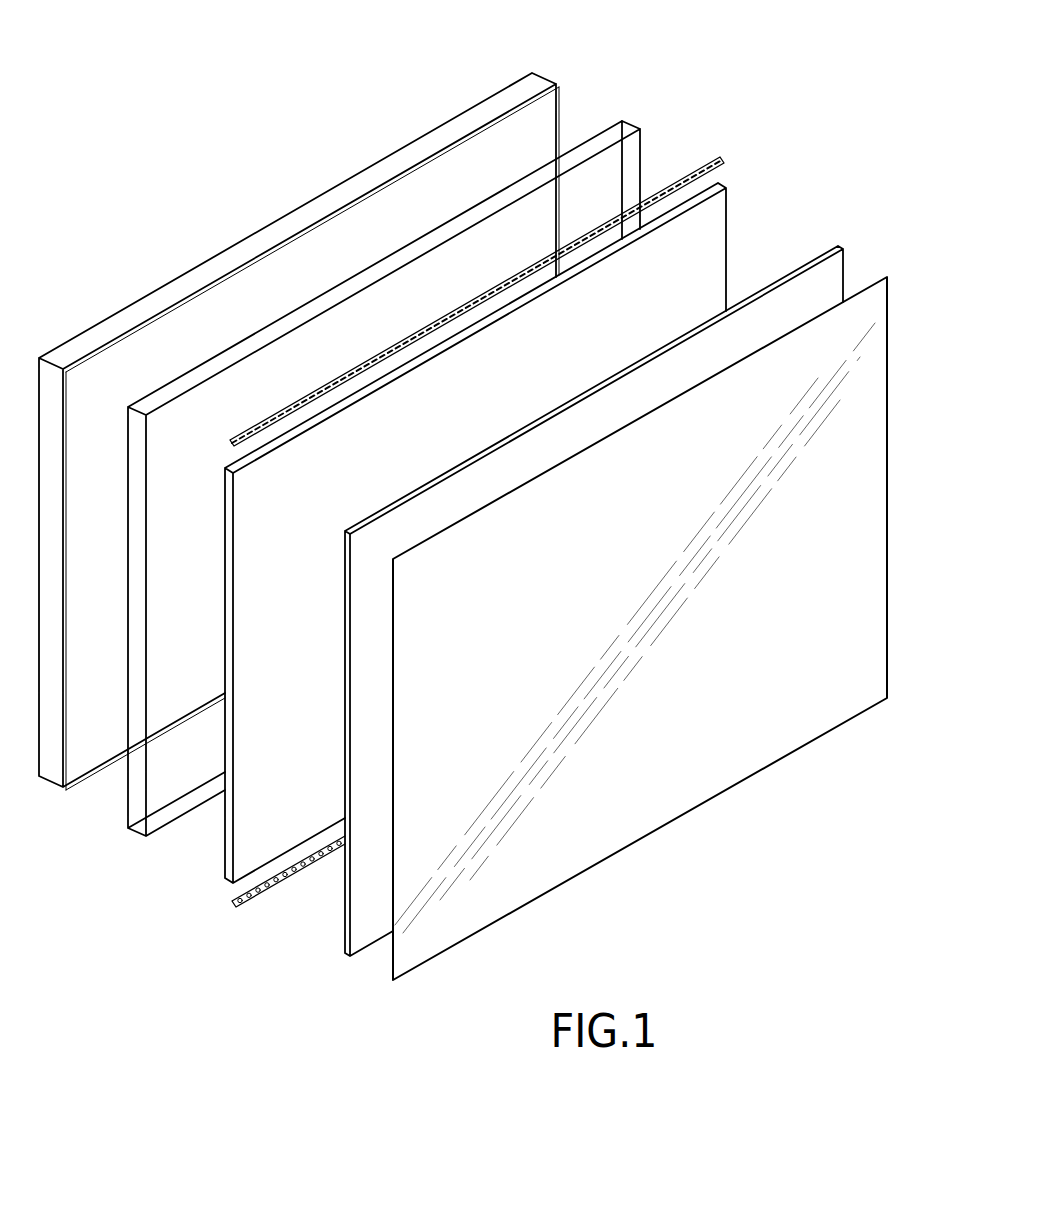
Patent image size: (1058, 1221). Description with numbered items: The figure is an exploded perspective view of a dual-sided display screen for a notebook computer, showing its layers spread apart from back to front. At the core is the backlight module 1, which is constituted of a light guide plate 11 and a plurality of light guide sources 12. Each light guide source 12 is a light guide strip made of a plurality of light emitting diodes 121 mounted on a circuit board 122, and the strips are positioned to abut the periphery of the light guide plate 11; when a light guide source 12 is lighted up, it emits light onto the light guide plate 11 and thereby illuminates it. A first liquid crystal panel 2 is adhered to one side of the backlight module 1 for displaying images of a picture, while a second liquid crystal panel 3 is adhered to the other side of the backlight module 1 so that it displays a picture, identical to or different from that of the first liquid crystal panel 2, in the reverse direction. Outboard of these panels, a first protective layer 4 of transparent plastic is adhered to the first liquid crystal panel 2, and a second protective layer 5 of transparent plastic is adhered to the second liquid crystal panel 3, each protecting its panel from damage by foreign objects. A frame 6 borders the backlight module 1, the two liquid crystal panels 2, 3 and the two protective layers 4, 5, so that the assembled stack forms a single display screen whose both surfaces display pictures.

The backlight module 1 is at (469, 530).
The light guide plate 11 is at (712, 253).
The light guide sources 12 is at (429, 530).
The light emitting diodes 121 is at (240, 896).
The circuit board 122 is at (228, 903).
The first liquid crystal panel 2 is at (795, 272).
The second liquid crystal panel 3 is at (548, 122).
The first protective layer 4 is at (690, 788).
The second protective layer 5 is at (297, 205).
The frame 6 is at (580, 152).